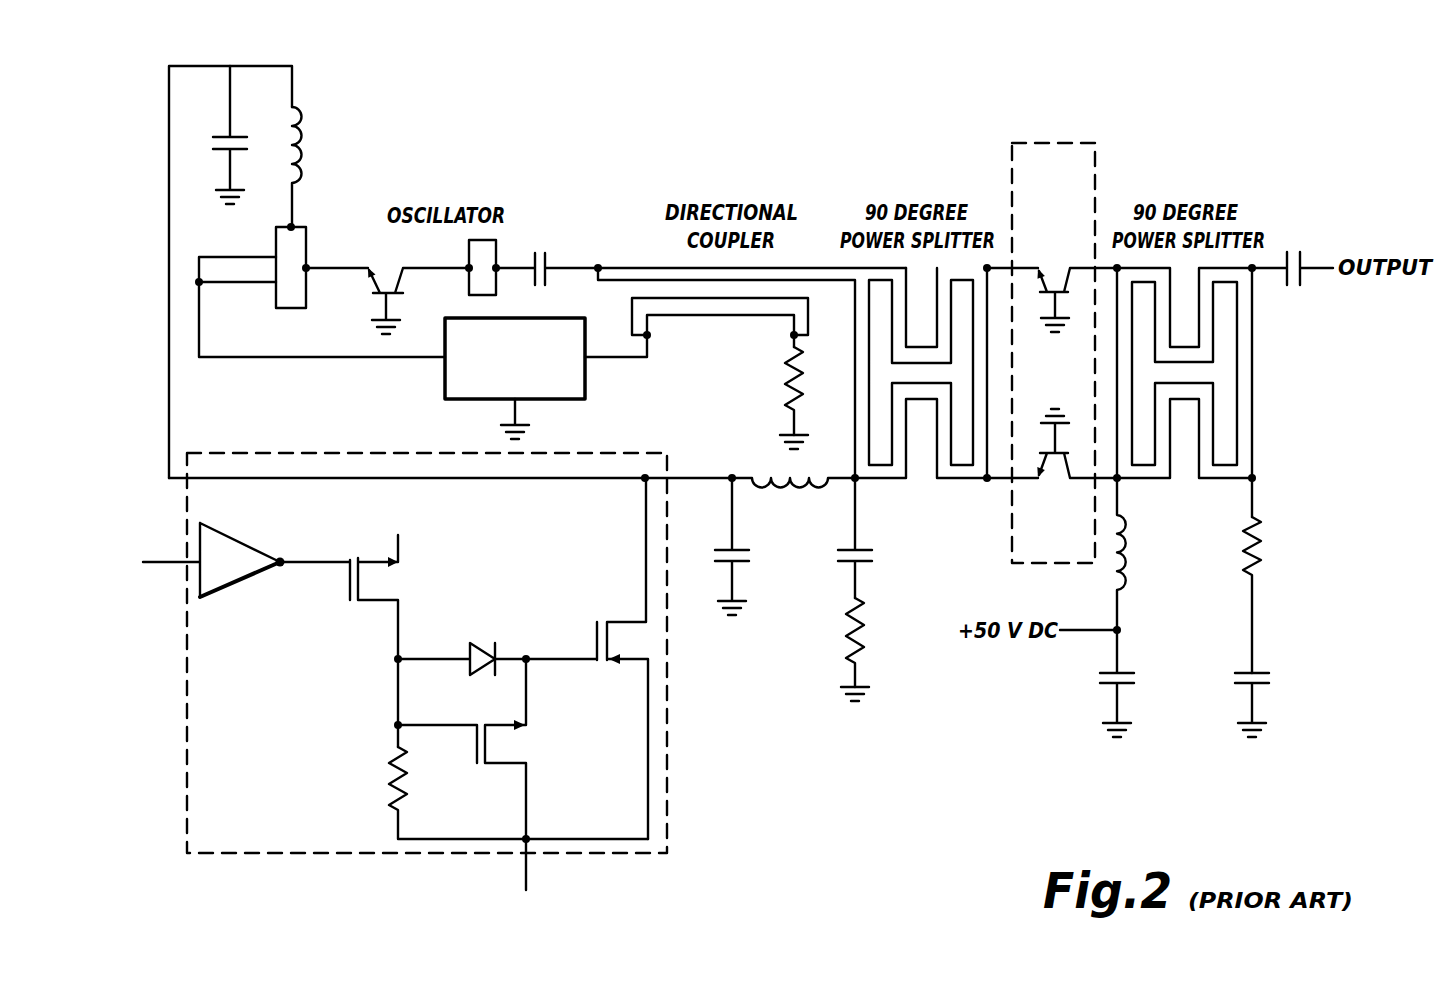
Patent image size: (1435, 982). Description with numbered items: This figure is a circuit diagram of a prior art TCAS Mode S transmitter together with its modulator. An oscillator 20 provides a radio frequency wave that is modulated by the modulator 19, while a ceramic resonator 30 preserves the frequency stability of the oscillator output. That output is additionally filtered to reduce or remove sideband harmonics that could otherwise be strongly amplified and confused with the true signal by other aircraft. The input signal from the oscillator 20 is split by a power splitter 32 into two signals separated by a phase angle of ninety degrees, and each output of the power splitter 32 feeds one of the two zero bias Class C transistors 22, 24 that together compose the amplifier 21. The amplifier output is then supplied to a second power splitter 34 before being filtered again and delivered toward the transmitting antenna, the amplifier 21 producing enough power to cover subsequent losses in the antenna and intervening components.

The modulator 19 is at (667, 735).
The oscillator 20 is at (496, 246).
The amplifier 21 is at (1058, 143).
The zero bias Class C transistor 22 is at (1041, 268).
The zero bias Class C transistor 24 is at (1040, 480).
The ceramic resonator 30 is at (586, 380).
The power splitter 32 is at (896, 478).
The second power splitter 34 is at (1252, 355).